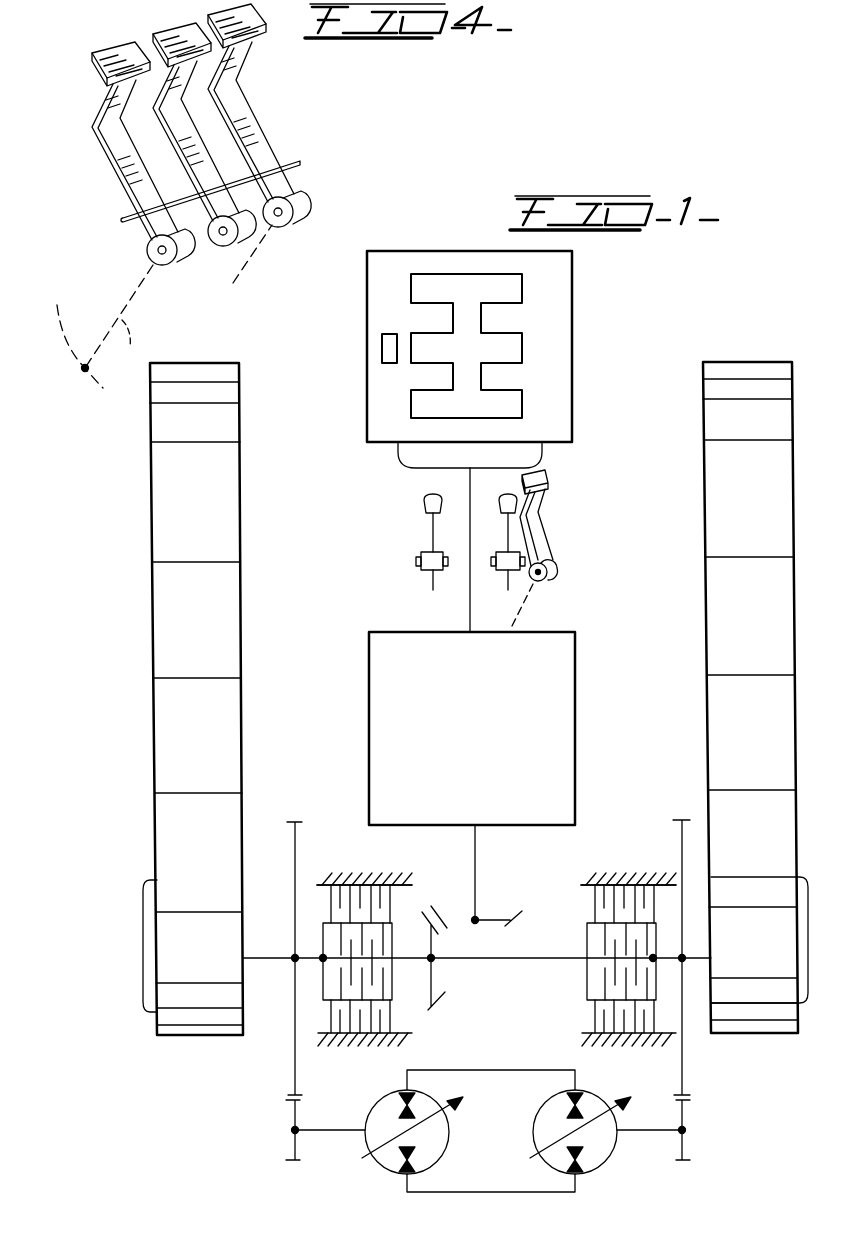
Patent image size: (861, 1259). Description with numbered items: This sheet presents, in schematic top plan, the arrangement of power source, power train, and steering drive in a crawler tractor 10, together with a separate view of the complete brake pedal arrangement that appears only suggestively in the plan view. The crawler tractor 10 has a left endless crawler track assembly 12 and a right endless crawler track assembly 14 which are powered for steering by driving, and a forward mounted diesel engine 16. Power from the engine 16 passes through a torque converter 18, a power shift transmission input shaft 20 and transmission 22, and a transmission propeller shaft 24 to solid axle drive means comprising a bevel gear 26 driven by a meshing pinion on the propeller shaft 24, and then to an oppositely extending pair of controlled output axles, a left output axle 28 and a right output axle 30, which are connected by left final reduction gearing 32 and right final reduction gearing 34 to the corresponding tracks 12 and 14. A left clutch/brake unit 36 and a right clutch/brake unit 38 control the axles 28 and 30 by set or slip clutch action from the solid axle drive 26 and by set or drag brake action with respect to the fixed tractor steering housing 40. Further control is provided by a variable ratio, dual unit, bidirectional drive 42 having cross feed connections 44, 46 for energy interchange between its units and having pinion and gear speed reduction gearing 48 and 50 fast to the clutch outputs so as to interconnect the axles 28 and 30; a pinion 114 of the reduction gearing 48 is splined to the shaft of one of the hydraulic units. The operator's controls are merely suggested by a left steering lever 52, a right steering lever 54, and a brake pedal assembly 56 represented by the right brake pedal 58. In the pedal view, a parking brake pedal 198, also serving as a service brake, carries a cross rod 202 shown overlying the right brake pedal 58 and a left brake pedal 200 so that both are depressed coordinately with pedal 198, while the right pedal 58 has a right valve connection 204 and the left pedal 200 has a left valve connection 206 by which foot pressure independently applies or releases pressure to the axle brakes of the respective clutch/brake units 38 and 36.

In FIG. 1, the crawler tractor 10 is at (604, 340).
In FIG. 1, the left endless crawler track assembly 12 is at (200, 370).
In FIG. 1, the right endless crawler track assembly 14 is at (735, 365).
In FIG. 1, the diesel engine 16 is at (558, 270).
In FIG. 1, the torque converter 18 is at (530, 456).
In FIG. 1, the power shift transmission input shaft 20 is at (470, 604).
In FIG. 1, the transmission 22 is at (565, 722).
In FIG. 1, the transmission propeller shaft 24 is at (478, 890).
In FIG. 1, the bevel gear 26 is at (434, 986).
In FIG. 1, the left output axle 28 is at (280, 965).
In FIG. 1, the right output axle 30 is at (688, 965).
In FIG. 1, the left final reduction gearing 32 is at (147, 900).
In FIG. 1, the right final reduction gearing 34 is at (800, 903).
In FIG. 1, the left clutch/brake unit 36 is at (393, 905).
In FIG. 1, the right clutch/brake unit 38 is at (656, 903).
In FIG. 1, the tractor steering housing 40 is at (325, 882).
In FIG. 1, the variable ratio, dual unit, bidirectional drive 42 is at (396, 1178).
In FIG. 1, the cross feed connection 44 is at (512, 1072).
In FIG. 1, the cross feed connection 46 is at (518, 1190).
In FIG. 1, the pinion and gear speed reduction gearing 48 is at (297, 1082).
In FIG. 1, the pinion and gear speed reduction gearing 50 is at (686, 1082).
In FIG. 1, the left steering lever 52 is at (430, 531).
In FIG. 1, the right steering lever 54 is at (505, 530).
In FIG. 4, the brake pedal assembly 56 is at (193, 132).
In FIG. 1, the brake pedal assembly 56 is at (562, 549).
In FIG. 4, the right brake pedal 58 is at (268, 12).
In FIG. 1, the right brake pedal 58 is at (549, 476).
In FIG. 1, the pinion 114 is at (290, 1145).
In FIG. 4, the parking brake pedal 198 is at (182, 38).
In FIG. 4, the left brake pedal 200 is at (118, 58).
In FIG. 4, the cross rod 202 is at (122, 221).
In FIG. 4, the right valve connection 204 is at (250, 266).
In FIG. 4, the left valve connection 206 is at (105, 326).